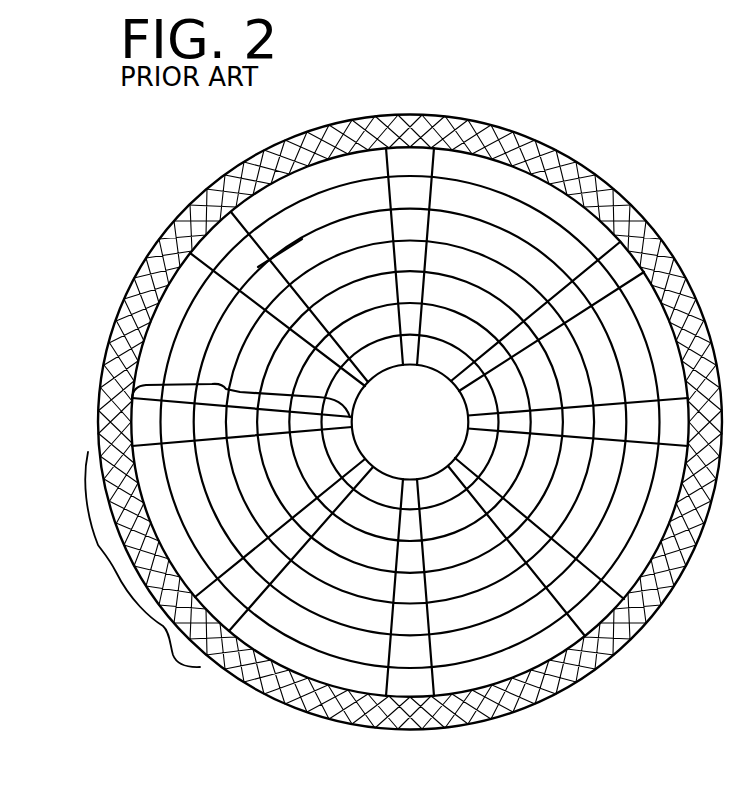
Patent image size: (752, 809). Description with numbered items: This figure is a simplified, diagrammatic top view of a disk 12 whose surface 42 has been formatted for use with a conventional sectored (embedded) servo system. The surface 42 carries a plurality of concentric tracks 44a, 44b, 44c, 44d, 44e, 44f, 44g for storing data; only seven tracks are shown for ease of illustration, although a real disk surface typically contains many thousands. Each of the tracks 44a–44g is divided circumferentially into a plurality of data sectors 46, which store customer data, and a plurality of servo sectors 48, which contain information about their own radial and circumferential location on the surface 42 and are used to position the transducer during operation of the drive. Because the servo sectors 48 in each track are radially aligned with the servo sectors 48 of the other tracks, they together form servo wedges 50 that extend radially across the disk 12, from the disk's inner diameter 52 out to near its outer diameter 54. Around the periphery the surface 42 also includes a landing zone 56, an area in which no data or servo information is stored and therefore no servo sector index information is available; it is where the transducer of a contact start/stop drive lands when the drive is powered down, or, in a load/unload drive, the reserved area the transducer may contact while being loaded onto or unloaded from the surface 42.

The disk 12 is at (263, 150).
The landing zone 56 is at (480, 134).
The surface 42 is at (416, 435).
The track 44a is at (525, 187).
The track 44b is at (523, 225).
The track 44c is at (523, 255).
The track 44d is at (507, 565).
The track 44e is at (477, 540).
The track 44f is at (452, 518).
The track 44g is at (430, 493).
The servo wedge 50 is at (218, 382).
The inner diameter 52 is at (360, 443).
The data sector 46 is at (98, 547).
The servo sector 48 is at (173, 655).
The outer diameter 54 is at (260, 694).